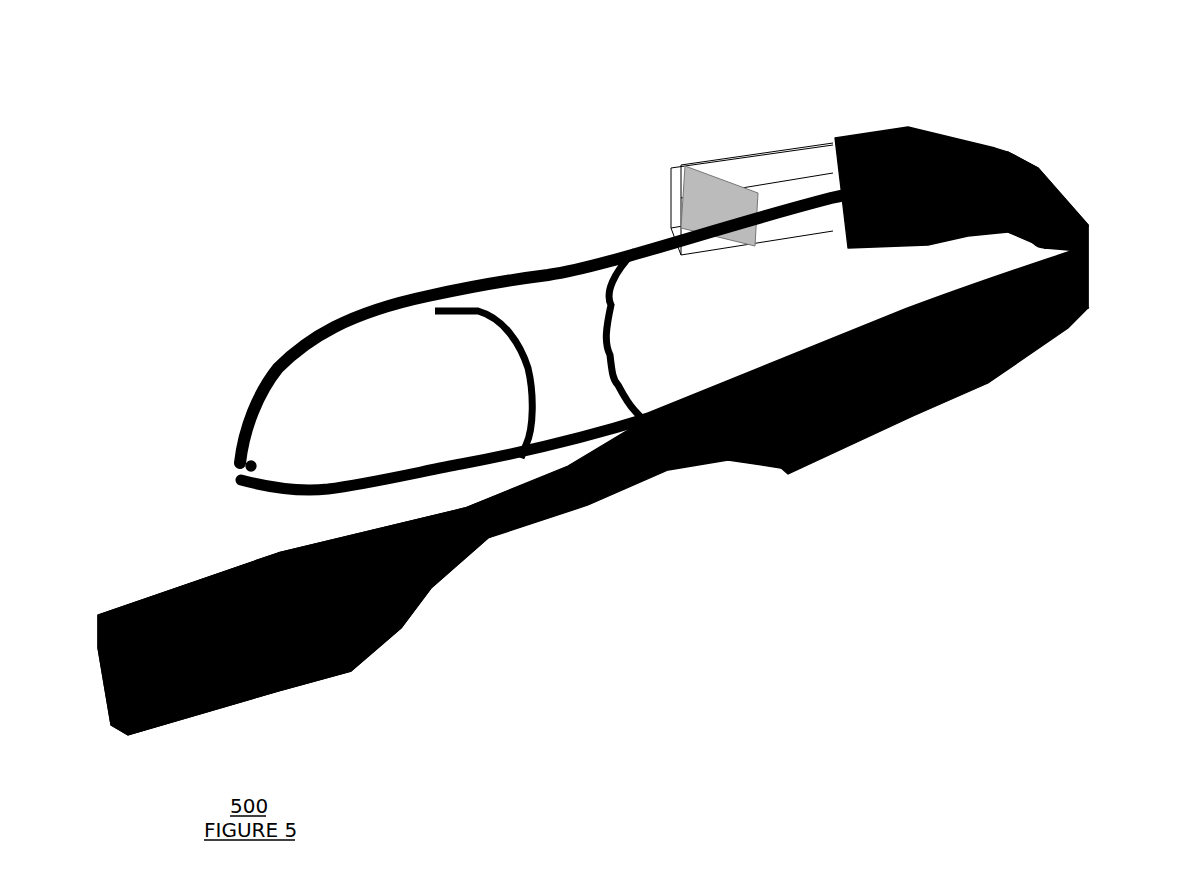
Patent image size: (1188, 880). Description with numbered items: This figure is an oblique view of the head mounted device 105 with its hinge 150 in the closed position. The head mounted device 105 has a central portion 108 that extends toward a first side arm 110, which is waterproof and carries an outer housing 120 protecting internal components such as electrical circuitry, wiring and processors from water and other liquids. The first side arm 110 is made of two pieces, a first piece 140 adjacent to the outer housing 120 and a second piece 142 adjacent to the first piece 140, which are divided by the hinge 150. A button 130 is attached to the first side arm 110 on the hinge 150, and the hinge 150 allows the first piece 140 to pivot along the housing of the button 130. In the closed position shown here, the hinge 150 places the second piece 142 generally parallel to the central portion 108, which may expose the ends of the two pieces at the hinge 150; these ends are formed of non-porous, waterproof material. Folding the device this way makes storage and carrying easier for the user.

The head mounted device 105 is at (318, 208).
The central portion 108 is at (506, 272).
The first side arm 110 is at (803, 497).
The outer housing 120 is at (174, 570).
The button 130 is at (1037, 172).
The first piece 140 is at (927, 120).
The second piece 142 is at (873, 423).
The hinge 150 is at (1083, 294).